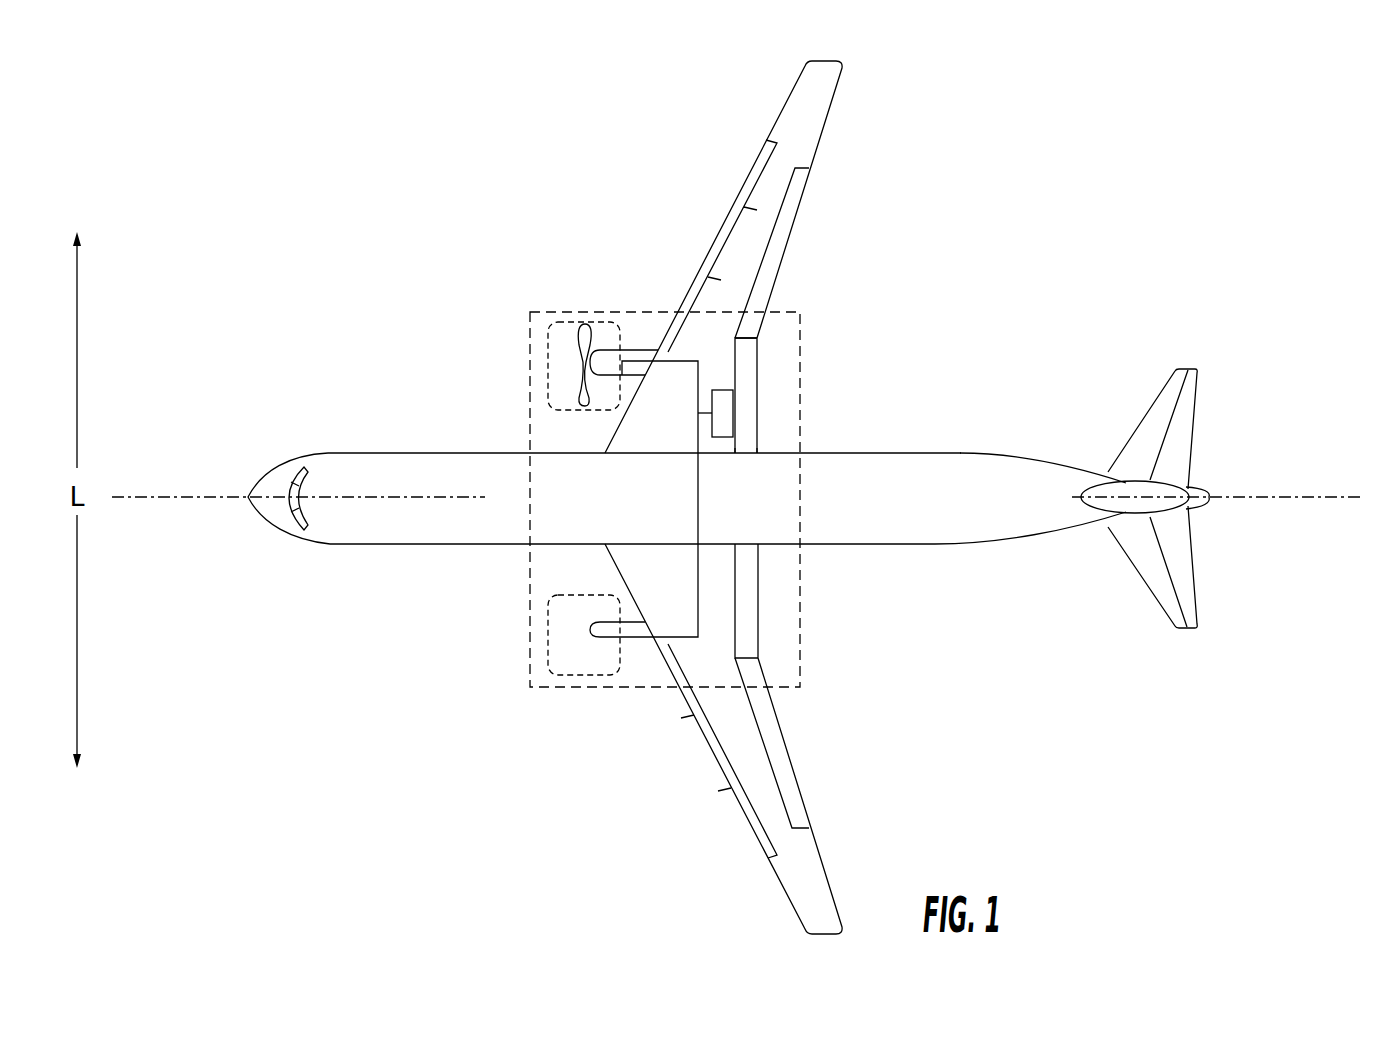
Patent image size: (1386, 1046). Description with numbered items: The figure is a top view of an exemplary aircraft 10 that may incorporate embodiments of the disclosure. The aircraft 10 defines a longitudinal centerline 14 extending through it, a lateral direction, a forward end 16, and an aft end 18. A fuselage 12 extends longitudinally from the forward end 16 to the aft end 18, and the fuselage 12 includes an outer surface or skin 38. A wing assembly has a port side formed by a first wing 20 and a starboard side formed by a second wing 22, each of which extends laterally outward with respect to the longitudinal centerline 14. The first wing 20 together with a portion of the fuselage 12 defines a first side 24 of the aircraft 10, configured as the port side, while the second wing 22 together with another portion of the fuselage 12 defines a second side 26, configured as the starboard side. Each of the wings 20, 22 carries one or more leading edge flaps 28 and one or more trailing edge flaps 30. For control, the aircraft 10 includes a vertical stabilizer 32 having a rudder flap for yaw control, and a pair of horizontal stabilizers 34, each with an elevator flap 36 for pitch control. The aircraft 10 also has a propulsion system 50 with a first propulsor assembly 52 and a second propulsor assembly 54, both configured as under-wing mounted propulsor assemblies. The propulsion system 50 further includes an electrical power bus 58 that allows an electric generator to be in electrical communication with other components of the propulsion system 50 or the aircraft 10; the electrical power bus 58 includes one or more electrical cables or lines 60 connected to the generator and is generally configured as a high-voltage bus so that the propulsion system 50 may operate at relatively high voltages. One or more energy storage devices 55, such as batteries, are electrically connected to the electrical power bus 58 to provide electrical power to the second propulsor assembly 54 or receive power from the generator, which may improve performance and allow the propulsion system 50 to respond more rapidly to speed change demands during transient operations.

The aircraft 10 is at (983, 182).
The fuselage 12 is at (326, 525).
The longitudinal centerline 14 is at (178, 500).
The forward end 16 is at (239, 547).
The aft end 18 is at (1139, 622).
The first wing 20 is at (768, 807).
The second wing 22 is at (812, 118).
The first side 24 is at (584, 719).
The second side 26 is at (528, 284).
The leading edge flap 28 is at (718, 757).
The trailing edge flap 30 is at (793, 770).
The vertical stabilizer 32 is at (1193, 499).
The horizontal stabilizer 34 is at (1162, 398).
The elevator flap 36 is at (1183, 413).
The outer surface or skin 38 is at (926, 507).
The propulsion system 50 is at (800, 388).
The first propulsor assembly 52 is at (571, 651).
The second propulsor assembly 54 is at (652, 344).
The energy storage device 55 is at (733, 427).
The electrical power bus 58 is at (716, 380).
The electrical cables or lines 60 is at (700, 517).